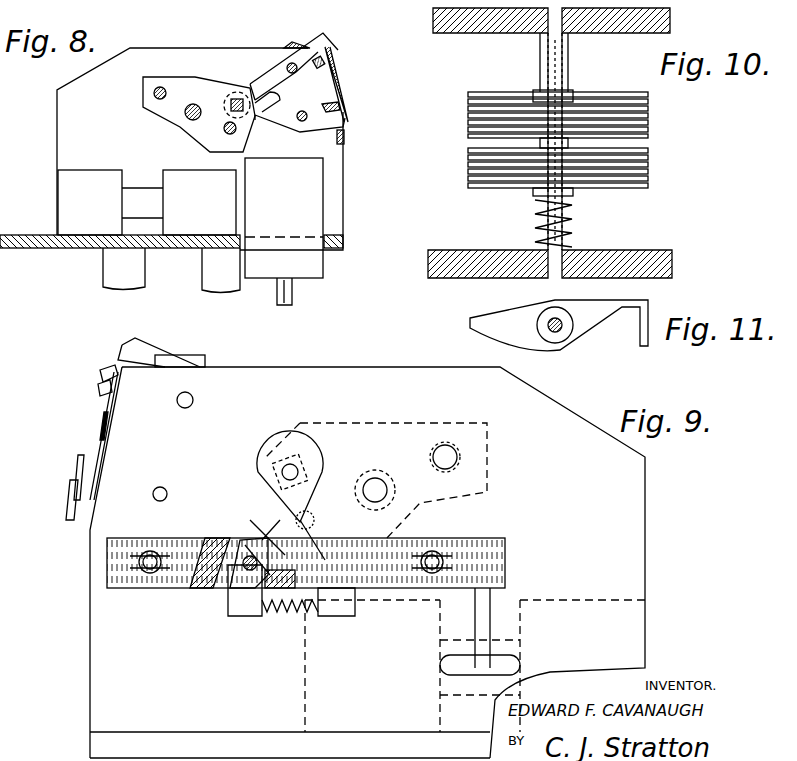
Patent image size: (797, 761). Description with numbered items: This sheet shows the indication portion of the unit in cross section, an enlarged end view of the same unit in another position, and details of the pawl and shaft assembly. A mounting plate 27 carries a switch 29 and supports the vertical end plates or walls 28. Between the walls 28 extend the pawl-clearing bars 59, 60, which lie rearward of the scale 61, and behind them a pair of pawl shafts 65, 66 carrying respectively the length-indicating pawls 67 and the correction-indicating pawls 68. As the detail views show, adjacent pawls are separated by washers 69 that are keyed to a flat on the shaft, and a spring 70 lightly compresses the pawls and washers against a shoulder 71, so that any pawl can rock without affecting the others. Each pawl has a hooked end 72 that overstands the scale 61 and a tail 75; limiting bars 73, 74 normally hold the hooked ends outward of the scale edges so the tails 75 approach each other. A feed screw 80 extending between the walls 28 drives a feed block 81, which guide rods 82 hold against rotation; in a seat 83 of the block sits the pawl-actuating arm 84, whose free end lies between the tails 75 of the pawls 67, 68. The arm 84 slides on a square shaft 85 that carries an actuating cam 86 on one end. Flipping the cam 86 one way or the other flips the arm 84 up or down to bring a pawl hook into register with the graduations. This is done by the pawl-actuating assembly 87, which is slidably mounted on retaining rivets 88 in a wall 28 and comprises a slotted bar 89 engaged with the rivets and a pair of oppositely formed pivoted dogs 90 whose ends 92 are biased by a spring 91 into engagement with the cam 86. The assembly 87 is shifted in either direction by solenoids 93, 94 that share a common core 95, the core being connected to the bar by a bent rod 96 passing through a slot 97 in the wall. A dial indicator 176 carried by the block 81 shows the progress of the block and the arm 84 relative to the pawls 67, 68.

In FIG. 8, the mounting plate 27 is at (76, 247).
In FIG. 9, the mounting plate 27 is at (205, 718).
In FIG. 8, the end plates or walls 28 is at (62, 125).
In FIG. 10, the end plates or walls 28 is at (455, 250).
In FIG. 9, the end plates or walls 28 is at (645, 530).
In FIG. 8, the switch 29 is at (315, 197).
In FIG. 8, the pawl-clearing bar 59 is at (341, 103).
In FIG. 8, the pawl-clearing bar 60 is at (324, 62).
In FIG. 8, the scale 61 is at (338, 72).
In FIG. 9, the scale 61 is at (95, 450).
In FIG. 8, the pawl shaft 65 is at (287, 66).
In FIG. 10, the pawl shaft 65 is at (537, 195).
In FIG. 11, the pawl shaft 65 is at (548, 318).
In FIG. 9, the pawl shaft 65 is at (193, 397).
In FIG. 8, the pawl shaft 66 is at (302, 121).
In FIG. 9, the pawl shaft 66 is at (164, 487).
In FIG. 8, the length-indicating pawl 67 is at (305, 55).
In FIG. 10, the length-indicating pawl 67 is at (650, 160).
In FIG. 11, the length-indicating pawl 67 is at (584, 326).
In FIG. 9, the length-indicating pawl 67 is at (160, 362).
In FIG. 8, the correction-indicating pawl 68 is at (316, 128).
In FIG. 10, the washer 69 is at (535, 170).
In FIG. 11, the washer 69 is at (562, 347).
In FIG. 10, the spring 70 is at (570, 238).
In FIG. 10, the shoulder 71 is at (557, 92).
In FIG. 11, the hooked end 72 is at (644, 348).
In FIG. 9, the hooked end 72 is at (96, 382).
In FIG. 8, the limiting bar 73 is at (292, 43).
In FIG. 9, the limiting bar 73 is at (200, 360).
In FIG. 8, the limiting bar 74 is at (345, 138).
In FIG. 11, the tail 75 is at (470, 323).
In FIG. 8, the feed screw 80 is at (183, 117).
In FIG. 9, the feed screw 80 is at (388, 480).
In FIG. 8, the feed block 81 is at (143, 80).
In FIG. 9, the feed block 81 is at (488, 444).
In FIG. 8, the guide rod 82 is at (153, 95).
In FIG. 9, the guide rod 82 is at (447, 450).
In FIG. 8, the seat 83 is at (224, 95).
In FIG. 8, the pawl-actuating arm 84 is at (270, 100).
In FIG. 8, the square shaft 85 is at (225, 120).
In FIG. 9, the square shaft 85 is at (300, 460).
In FIG. 9, the actuating cam 86 is at (318, 490).
In FIG. 9, the pawl-actuating assembly 87 is at (205, 592).
In FIG. 9, the retaining rivet 88 is at (155, 550).
In FIG. 9, the slotted bar 89 is at (235, 550).
In FIG. 9, the pivoted dog 90 is at (245, 618).
In FIG. 9, the spring 91 is at (290, 616).
In FIG. 9, the dog end 92 is at (258, 523).
In FIG. 8, the solenoid 93 is at (190, 178).
In FIG. 9, the solenoid 93 is at (312, 690).
In FIG. 8, the solenoid 94 is at (88, 178).
In FIG. 9, the solenoid 94 is at (607, 606).
In FIG. 8, the common core 95 is at (138, 194).
In FIG. 9, the common core 95 is at (460, 668).
In FIG. 9, the bent rod 96 is at (492, 605).
In FIG. 9, the slot 97 is at (522, 662).
In FIG. 9, the dial indicator 176 is at (98, 422).